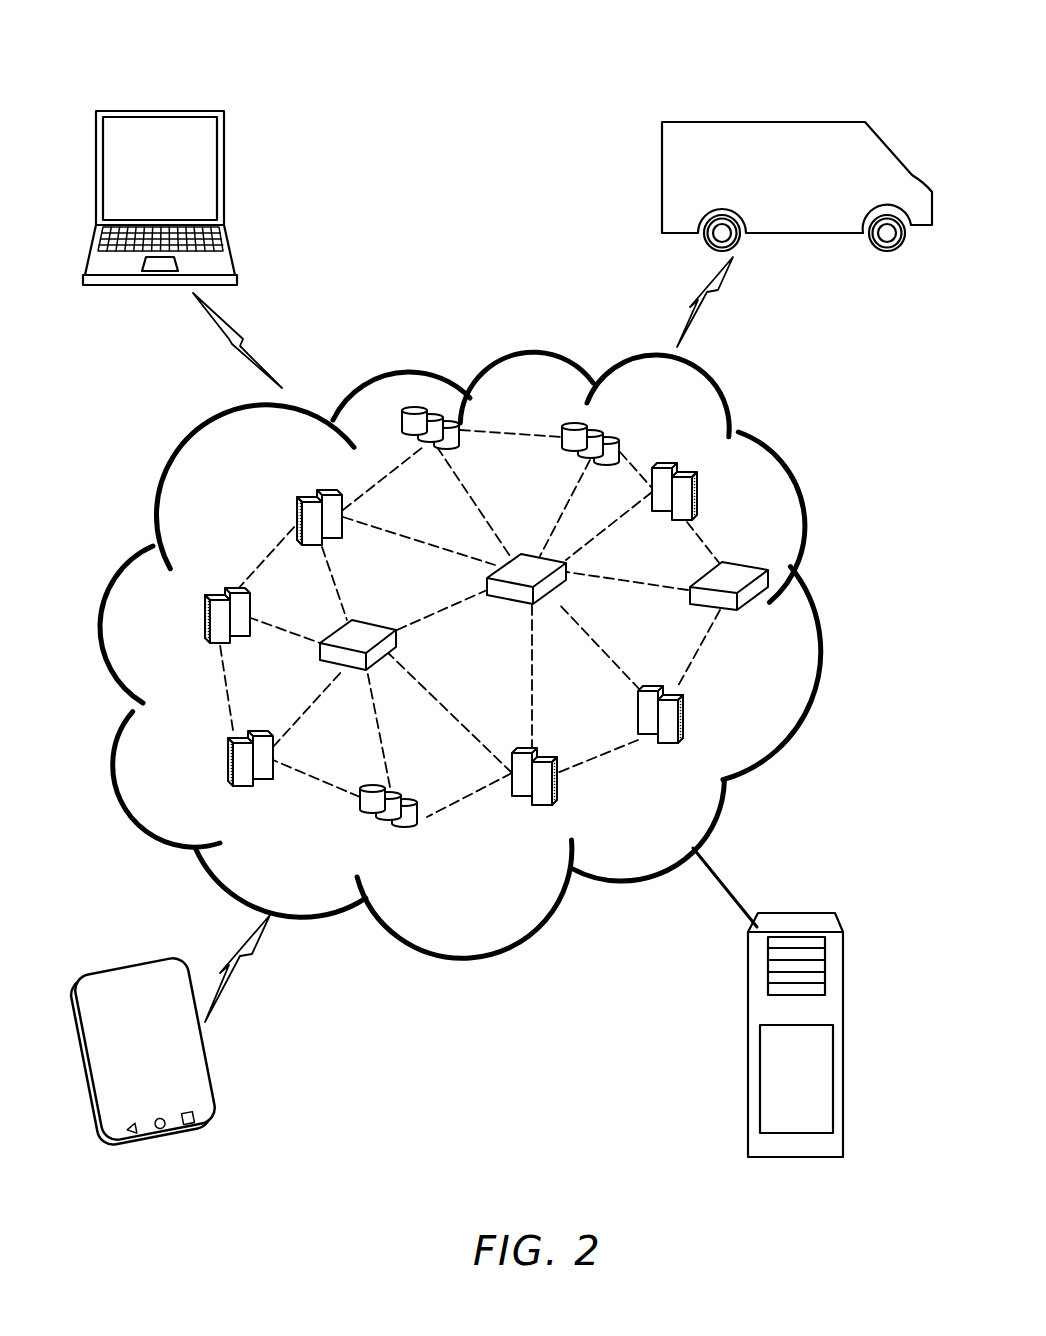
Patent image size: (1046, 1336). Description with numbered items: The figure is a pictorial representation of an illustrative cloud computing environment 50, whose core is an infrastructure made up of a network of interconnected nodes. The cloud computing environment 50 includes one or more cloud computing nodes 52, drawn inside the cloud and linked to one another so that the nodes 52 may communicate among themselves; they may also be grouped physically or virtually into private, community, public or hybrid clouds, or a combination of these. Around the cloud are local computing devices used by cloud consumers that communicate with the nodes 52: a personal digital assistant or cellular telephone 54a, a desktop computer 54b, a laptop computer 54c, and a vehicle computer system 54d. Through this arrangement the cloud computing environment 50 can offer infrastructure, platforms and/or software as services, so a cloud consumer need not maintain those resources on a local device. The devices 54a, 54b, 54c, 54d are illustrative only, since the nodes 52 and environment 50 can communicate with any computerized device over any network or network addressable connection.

The cloud computing environment 50 is at (366, 63).
The cloud computing node 52 is at (200, 638).
The personal digital assistant (PDA) or cellular telephone 54a is at (180, 1138).
The desktop computer 54b is at (748, 1132).
The laptop computer 54c is at (150, 111).
The vehicle computer system 54d is at (760, 122).